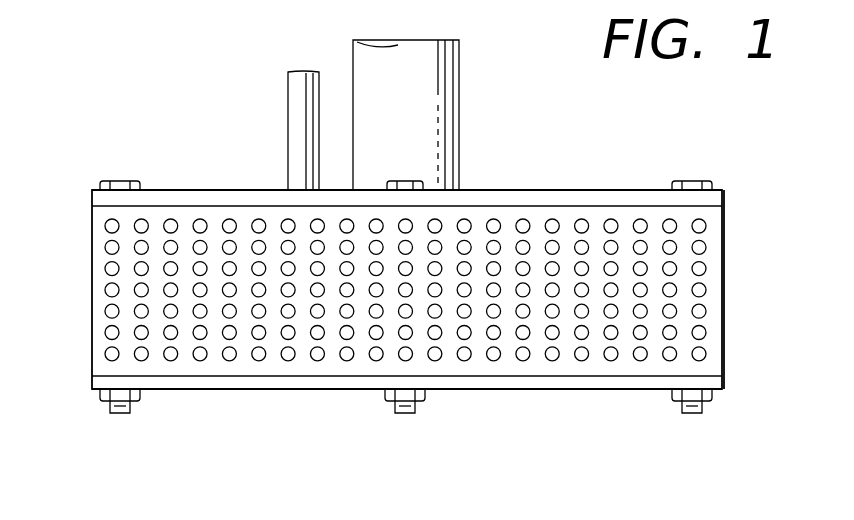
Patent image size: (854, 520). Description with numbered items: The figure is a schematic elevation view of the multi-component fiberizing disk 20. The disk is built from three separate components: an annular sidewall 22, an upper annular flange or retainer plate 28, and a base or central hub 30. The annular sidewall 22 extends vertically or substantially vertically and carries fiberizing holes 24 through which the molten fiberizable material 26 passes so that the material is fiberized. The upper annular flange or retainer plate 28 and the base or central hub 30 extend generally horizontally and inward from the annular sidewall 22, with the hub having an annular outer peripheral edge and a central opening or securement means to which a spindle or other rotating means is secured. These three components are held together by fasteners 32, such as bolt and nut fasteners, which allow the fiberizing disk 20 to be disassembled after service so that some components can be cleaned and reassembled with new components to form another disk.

The multi-component fiberizing disk 20 is at (727, 145).
The annular sidewall 22 is at (724, 352).
The fiberizing holes 24 is at (700, 263).
The molten fiberizable material 26 is at (295, 113).
The upper annular flange or retainer plate 28 is at (532, 197).
The base or central hub 30 is at (252, 382).
The fasteners 32 is at (118, 181).